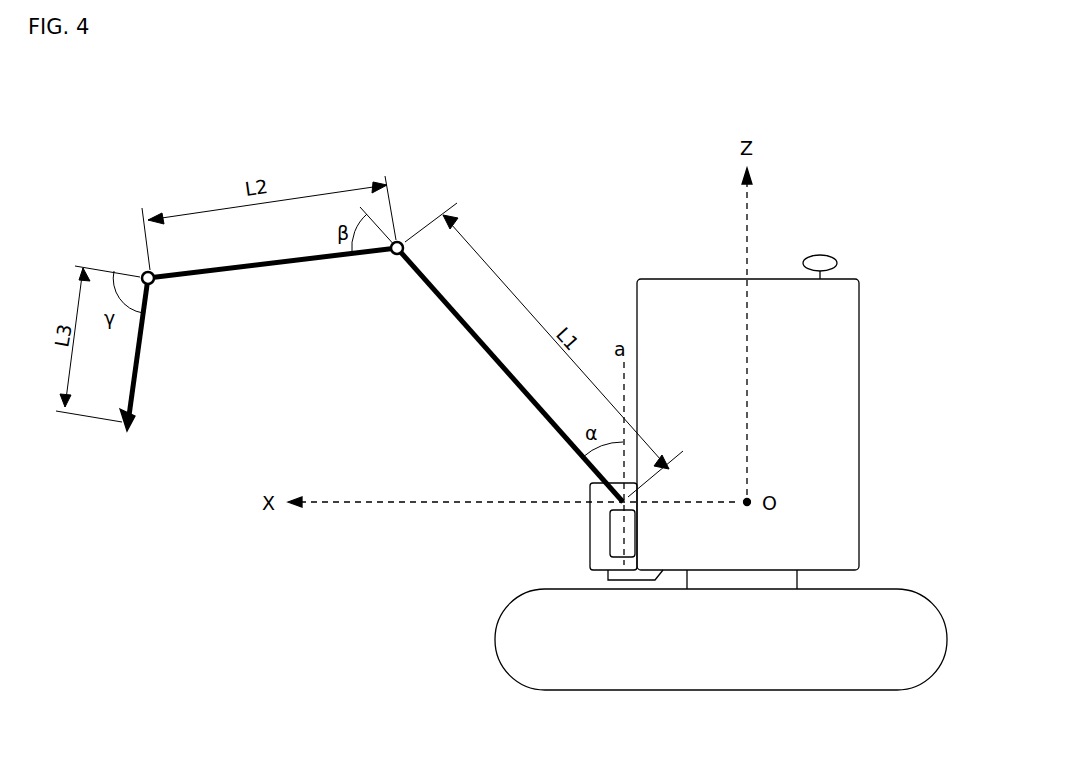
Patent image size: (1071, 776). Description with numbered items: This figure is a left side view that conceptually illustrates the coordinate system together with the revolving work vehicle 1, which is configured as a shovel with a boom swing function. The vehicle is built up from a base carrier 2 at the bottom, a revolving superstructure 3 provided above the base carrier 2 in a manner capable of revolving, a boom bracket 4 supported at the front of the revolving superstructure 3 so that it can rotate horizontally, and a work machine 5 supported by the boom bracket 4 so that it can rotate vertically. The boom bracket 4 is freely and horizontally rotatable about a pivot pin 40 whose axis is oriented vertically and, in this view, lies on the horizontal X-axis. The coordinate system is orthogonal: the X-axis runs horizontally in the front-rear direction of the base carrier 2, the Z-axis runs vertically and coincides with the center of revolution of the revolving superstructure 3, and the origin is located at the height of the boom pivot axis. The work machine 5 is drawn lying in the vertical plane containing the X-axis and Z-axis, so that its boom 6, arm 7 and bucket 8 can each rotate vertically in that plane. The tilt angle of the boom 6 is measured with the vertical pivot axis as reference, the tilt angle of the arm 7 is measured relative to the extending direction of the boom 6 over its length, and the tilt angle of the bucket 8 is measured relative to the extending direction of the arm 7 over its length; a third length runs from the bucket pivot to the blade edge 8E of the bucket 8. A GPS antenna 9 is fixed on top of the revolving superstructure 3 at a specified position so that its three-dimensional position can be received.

The revolving work vehicle 1 is at (835, 168).
The base carrier 2 is at (492, 628).
The revolving superstructure 3 is at (862, 552).
The boom bracket 4 is at (590, 490).
The pivot pin 40 is at (610, 535).
The work machine 5 is at (230, 275).
The boom 6 is at (508, 378).
The arm 7 is at (316, 266).
The bucket 8 is at (138, 366).
The blade edge 8E is at (128, 432).
The GPS antenna 9 is at (830, 258).